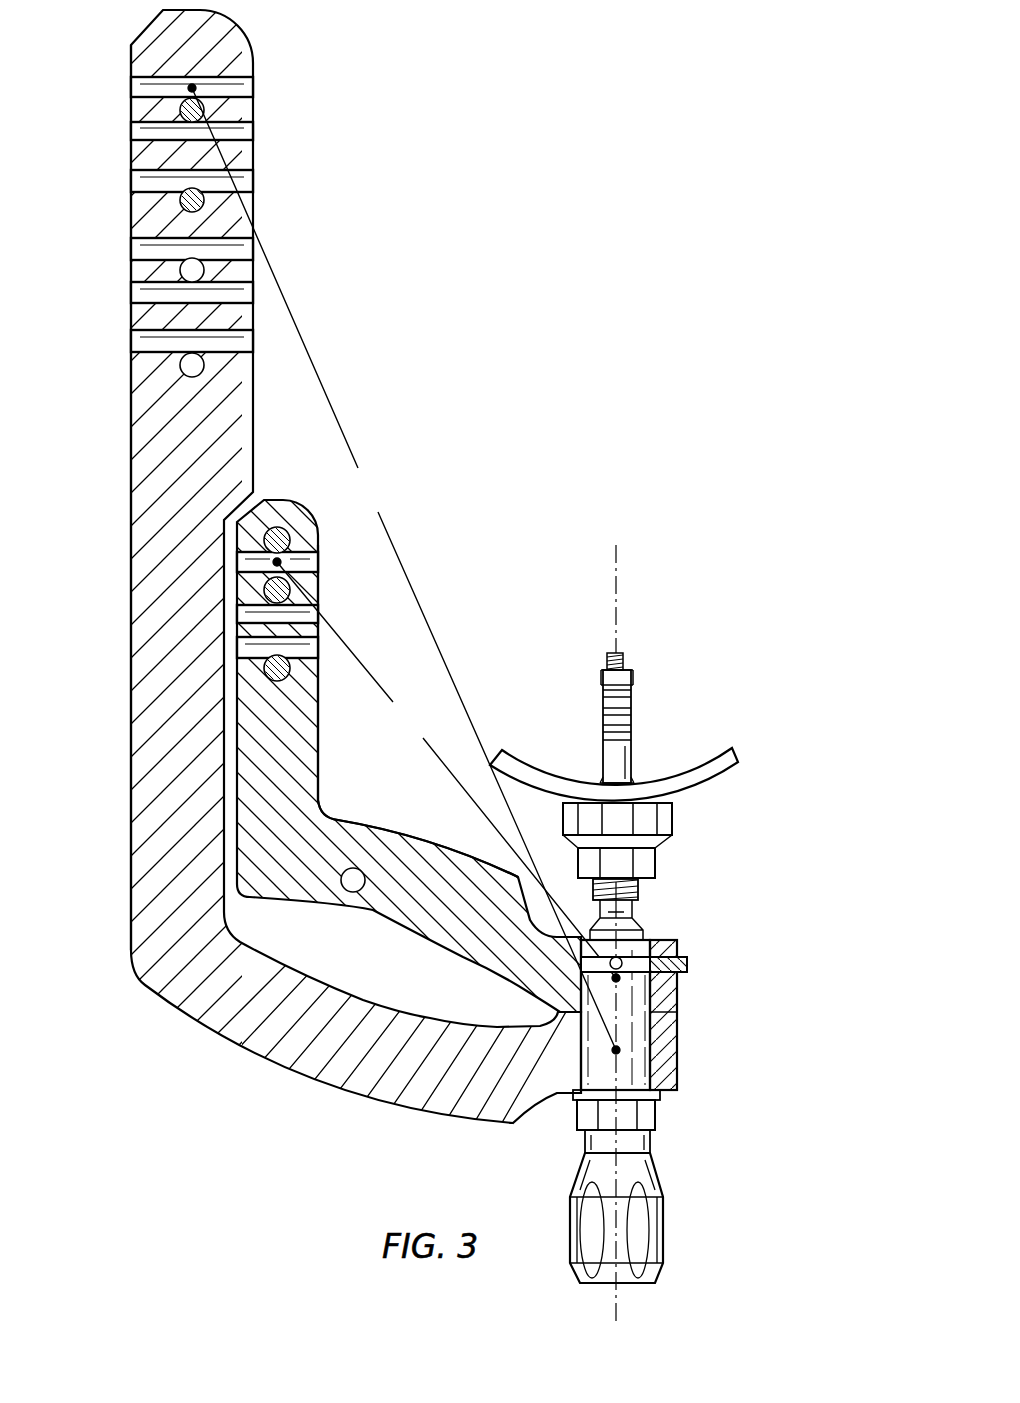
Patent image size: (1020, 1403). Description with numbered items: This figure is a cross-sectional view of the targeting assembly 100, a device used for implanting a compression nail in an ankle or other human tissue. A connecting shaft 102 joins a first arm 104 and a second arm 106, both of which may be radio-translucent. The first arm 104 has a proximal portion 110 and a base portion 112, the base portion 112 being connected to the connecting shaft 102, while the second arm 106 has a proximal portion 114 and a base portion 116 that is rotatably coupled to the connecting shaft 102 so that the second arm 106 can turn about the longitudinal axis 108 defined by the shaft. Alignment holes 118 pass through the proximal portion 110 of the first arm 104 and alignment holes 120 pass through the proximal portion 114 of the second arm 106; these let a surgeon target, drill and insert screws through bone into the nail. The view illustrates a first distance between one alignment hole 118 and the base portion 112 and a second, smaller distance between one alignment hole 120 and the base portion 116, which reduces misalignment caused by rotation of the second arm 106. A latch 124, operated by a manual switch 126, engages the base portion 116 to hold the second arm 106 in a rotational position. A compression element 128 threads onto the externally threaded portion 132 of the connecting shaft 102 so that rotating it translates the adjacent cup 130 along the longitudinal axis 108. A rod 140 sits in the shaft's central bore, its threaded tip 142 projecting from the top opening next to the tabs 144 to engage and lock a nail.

The targeting assembly 100 is at (656, 61).
The connecting shaft 102 is at (623, 704).
The first arm 104 is at (131, 540).
The second arm 106 is at (320, 782).
The longitudinal axis 108 is at (622, 598).
The proximal portion 110 is at (128, 444).
The base portion 112 is at (684, 1062).
The proximal portion 114 is at (285, 496).
The base portion 116 is at (684, 1012).
The alignment hole 118 is at (140, 91).
The alignment hole 120 is at (320, 556).
The latch 124 is at (678, 976).
The switch 126 is at (690, 960).
The compression element 128 is at (674, 826).
The cup 130 is at (727, 778).
The externally threaded portion 132 is at (642, 890).
The rod 140 is at (665, 1233).
The tip 142 is at (606, 655).
The tabs 144 is at (634, 676).